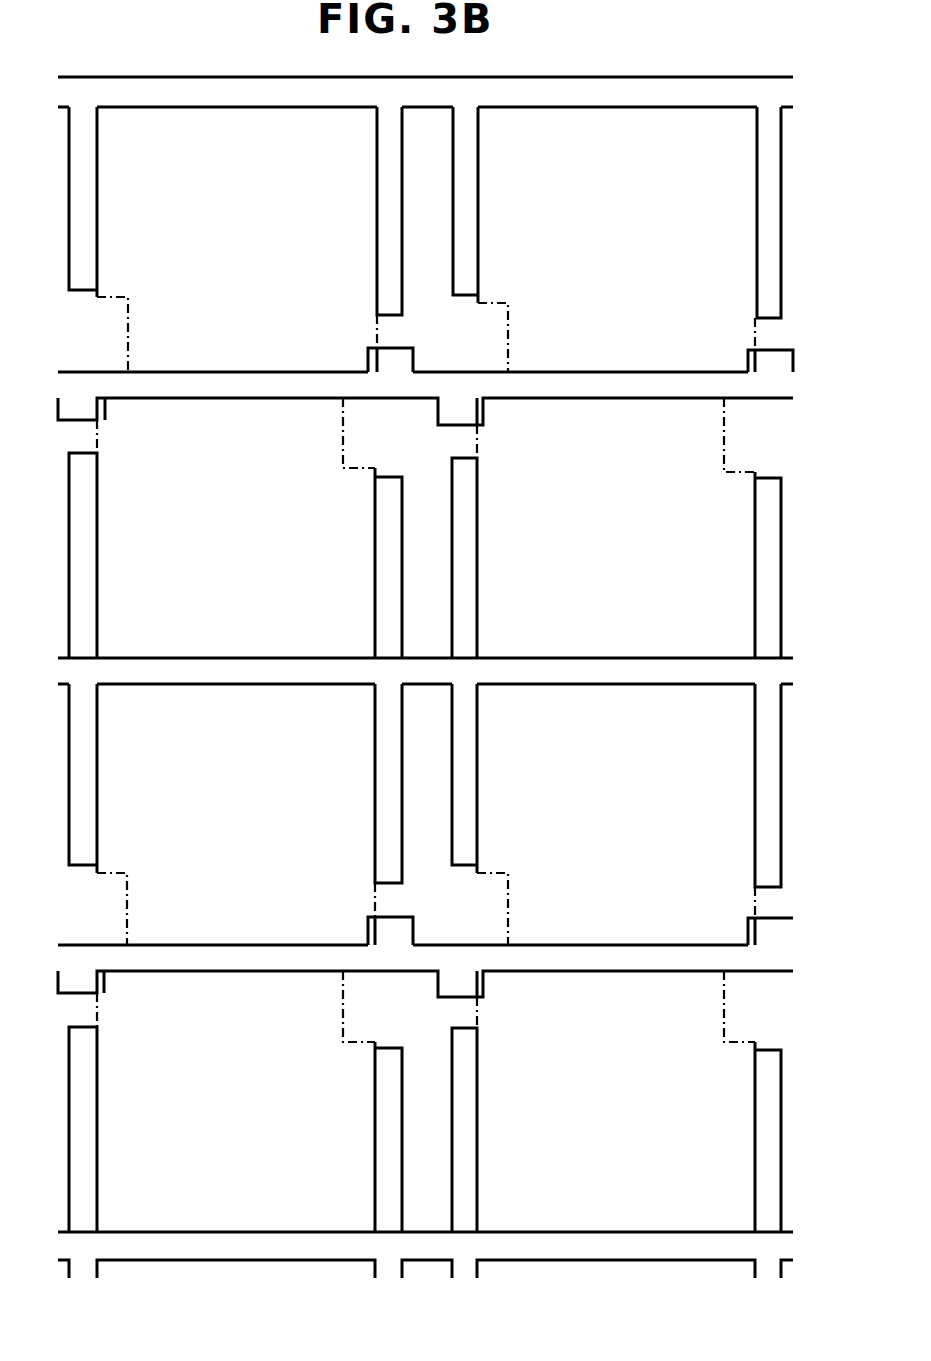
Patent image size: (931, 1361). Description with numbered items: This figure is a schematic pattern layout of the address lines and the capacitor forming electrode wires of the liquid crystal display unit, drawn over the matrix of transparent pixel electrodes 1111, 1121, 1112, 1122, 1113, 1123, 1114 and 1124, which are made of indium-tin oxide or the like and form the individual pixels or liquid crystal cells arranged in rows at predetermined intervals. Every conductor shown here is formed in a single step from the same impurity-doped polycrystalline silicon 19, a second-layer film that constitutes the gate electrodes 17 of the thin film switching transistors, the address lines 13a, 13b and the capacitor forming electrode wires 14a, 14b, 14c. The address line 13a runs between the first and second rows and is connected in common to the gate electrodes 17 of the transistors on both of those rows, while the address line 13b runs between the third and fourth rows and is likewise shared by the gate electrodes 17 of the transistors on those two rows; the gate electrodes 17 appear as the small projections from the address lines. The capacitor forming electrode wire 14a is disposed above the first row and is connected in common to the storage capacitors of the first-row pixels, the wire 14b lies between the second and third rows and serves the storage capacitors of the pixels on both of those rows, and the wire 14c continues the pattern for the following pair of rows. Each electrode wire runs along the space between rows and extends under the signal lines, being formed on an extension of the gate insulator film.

The transparent pixel electrode 1111 is at (235, 239).
The transparent pixel electrode 1121 is at (617, 239).
The transparent pixel electrode 1112 is at (235, 555).
The transparent pixel electrode 1122 is at (616, 558).
The transparent pixel electrode 1113 is at (235, 814).
The transparent pixel electrode 1123 is at (616, 814).
The transparent pixel electrode 1114 is at (235, 1129).
The transparent pixel electrode 1124 is at (616, 1130).
The address line 13a is at (243, 383).
The address line 13b is at (253, 957).
The capacitor forming electrode wire 14a is at (641, 104).
The capacitor forming electrode wire 14b is at (655, 688).
The capacitor forming electrode wire 14c is at (660, 1247).
The gate electrode 17 is at (385, 364).
The impurity-doped polycrystalline silicon 19 is at (250, 401).